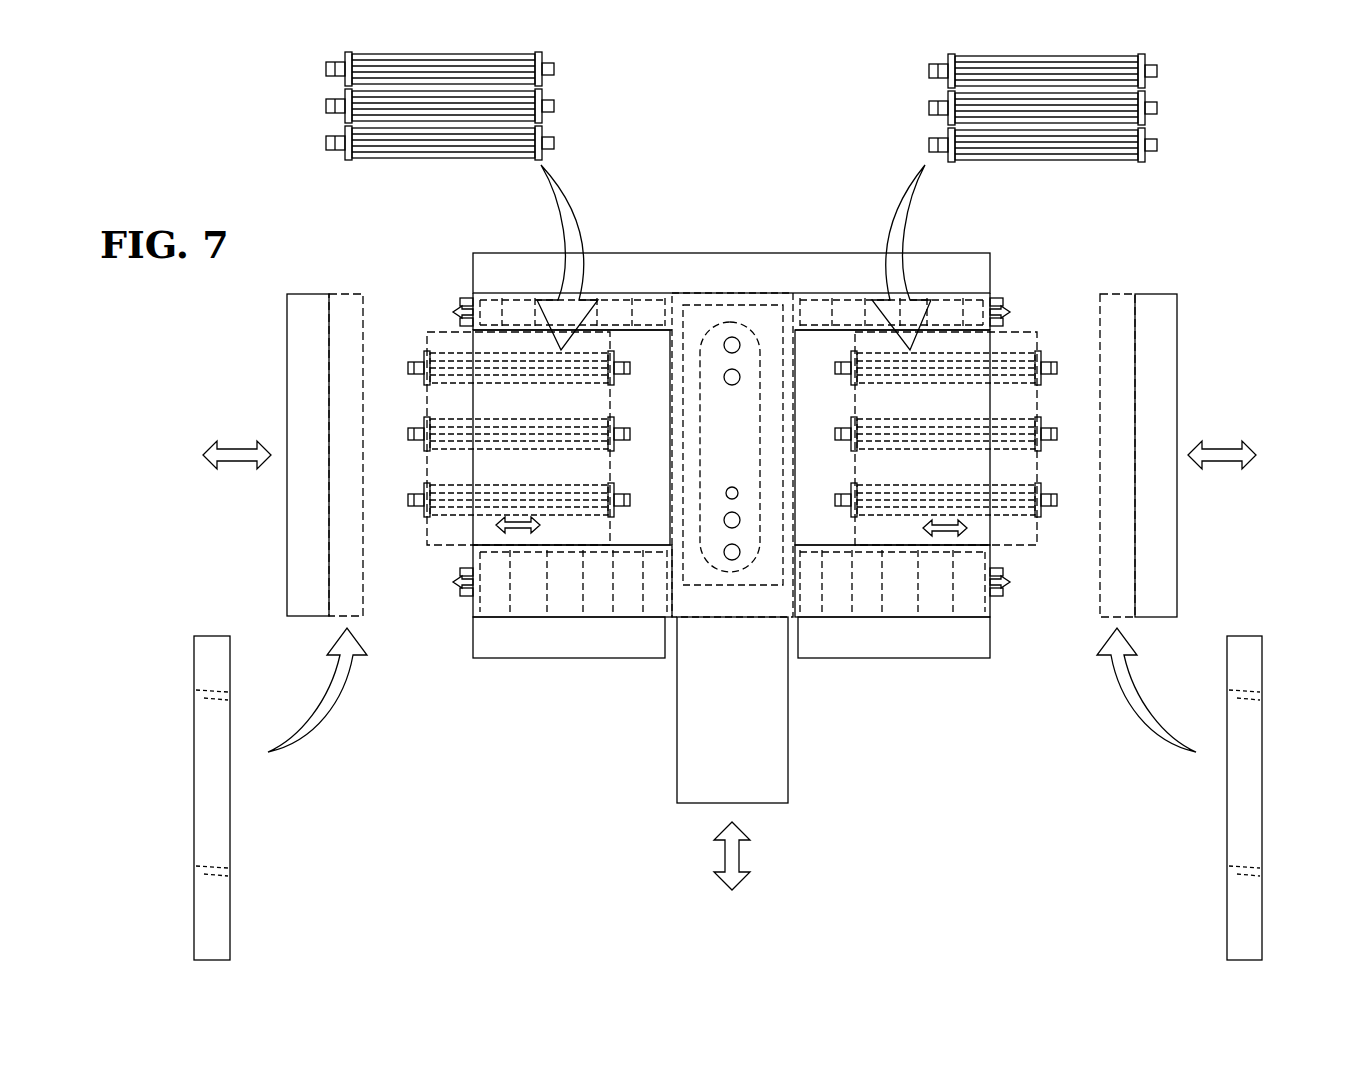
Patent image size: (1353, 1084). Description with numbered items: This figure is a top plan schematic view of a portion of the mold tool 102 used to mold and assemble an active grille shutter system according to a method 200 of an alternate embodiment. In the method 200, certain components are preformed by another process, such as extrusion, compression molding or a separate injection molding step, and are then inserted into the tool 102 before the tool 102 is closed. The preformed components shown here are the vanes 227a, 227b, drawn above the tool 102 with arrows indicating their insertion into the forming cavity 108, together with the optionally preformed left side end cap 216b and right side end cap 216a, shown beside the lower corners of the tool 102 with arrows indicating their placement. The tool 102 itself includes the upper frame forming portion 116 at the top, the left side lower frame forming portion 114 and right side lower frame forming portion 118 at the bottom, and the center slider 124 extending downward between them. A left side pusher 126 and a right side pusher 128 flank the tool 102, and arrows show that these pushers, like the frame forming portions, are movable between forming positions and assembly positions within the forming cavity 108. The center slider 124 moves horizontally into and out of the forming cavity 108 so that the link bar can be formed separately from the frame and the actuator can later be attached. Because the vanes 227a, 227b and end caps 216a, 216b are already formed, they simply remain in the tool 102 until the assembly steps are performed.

The tool 102 is at (388, 242).
The forming cavity 108 is at (1026, 318).
The left side lower frame forming portion 114 is at (591, 648).
The upper frame forming portion 116 is at (752, 283).
The right side lower frame forming portion 118 is at (914, 648).
The center slider 124 is at (755, 765).
The left side pusher 126 is at (323, 468).
The right side pusher 128 is at (1172, 468).
The method 200 is at (780, 529).
The right side end cap 216a is at (1247, 840).
The left side end cap 216b is at (216, 840).
The vane 227a is at (296, 77).
The vane 227b is at (1182, 75).